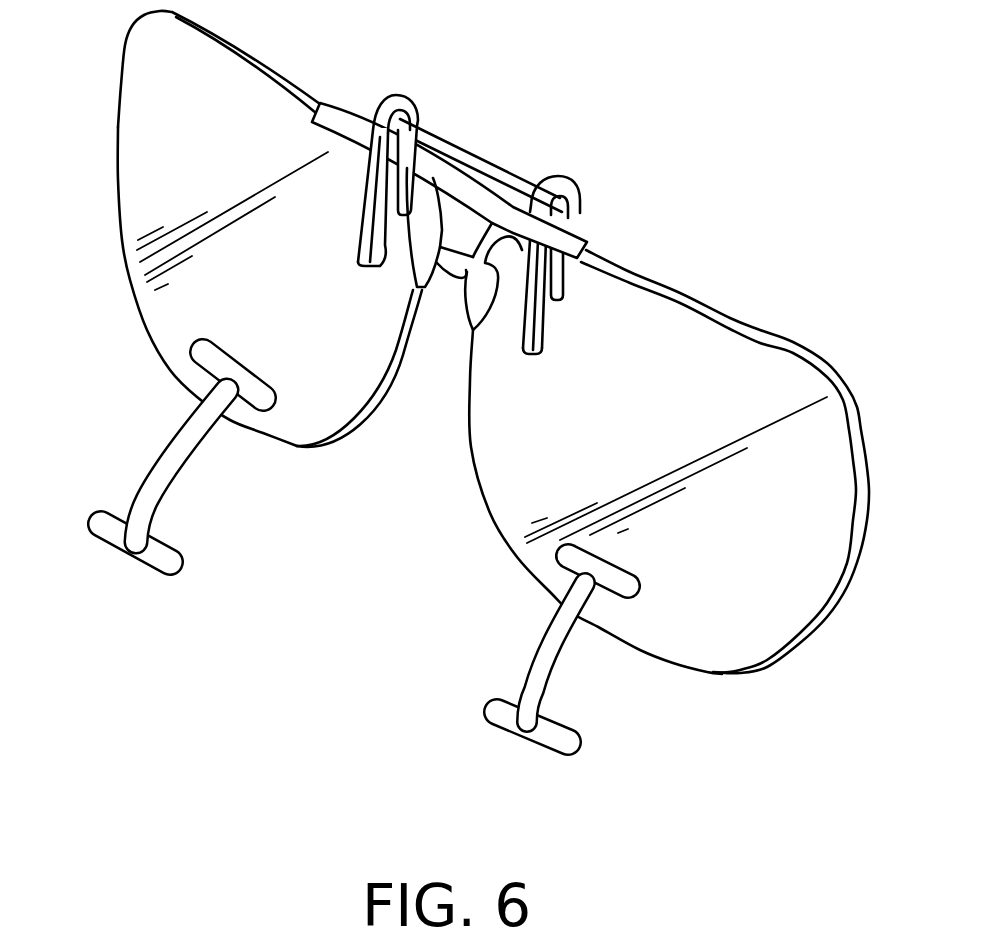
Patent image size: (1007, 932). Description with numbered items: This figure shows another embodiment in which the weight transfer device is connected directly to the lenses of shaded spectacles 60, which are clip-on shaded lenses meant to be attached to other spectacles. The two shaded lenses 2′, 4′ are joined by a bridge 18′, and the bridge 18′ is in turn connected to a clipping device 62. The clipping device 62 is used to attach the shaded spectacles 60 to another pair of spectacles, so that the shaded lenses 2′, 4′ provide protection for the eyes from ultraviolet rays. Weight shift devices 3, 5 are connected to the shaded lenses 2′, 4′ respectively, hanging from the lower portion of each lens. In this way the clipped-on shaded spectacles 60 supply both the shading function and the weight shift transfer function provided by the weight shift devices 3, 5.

The shaded spectacles 60 is at (453, 386).
The clipping device 62 is at (390, 99).
The bridge 18′ is at (585, 239).
The shaded lens 4′ is at (113, 247).
The shaded lens 2′ is at (718, 680).
The weight shift device 5 is at (161, 440).
The weight shift device 3 is at (540, 623).